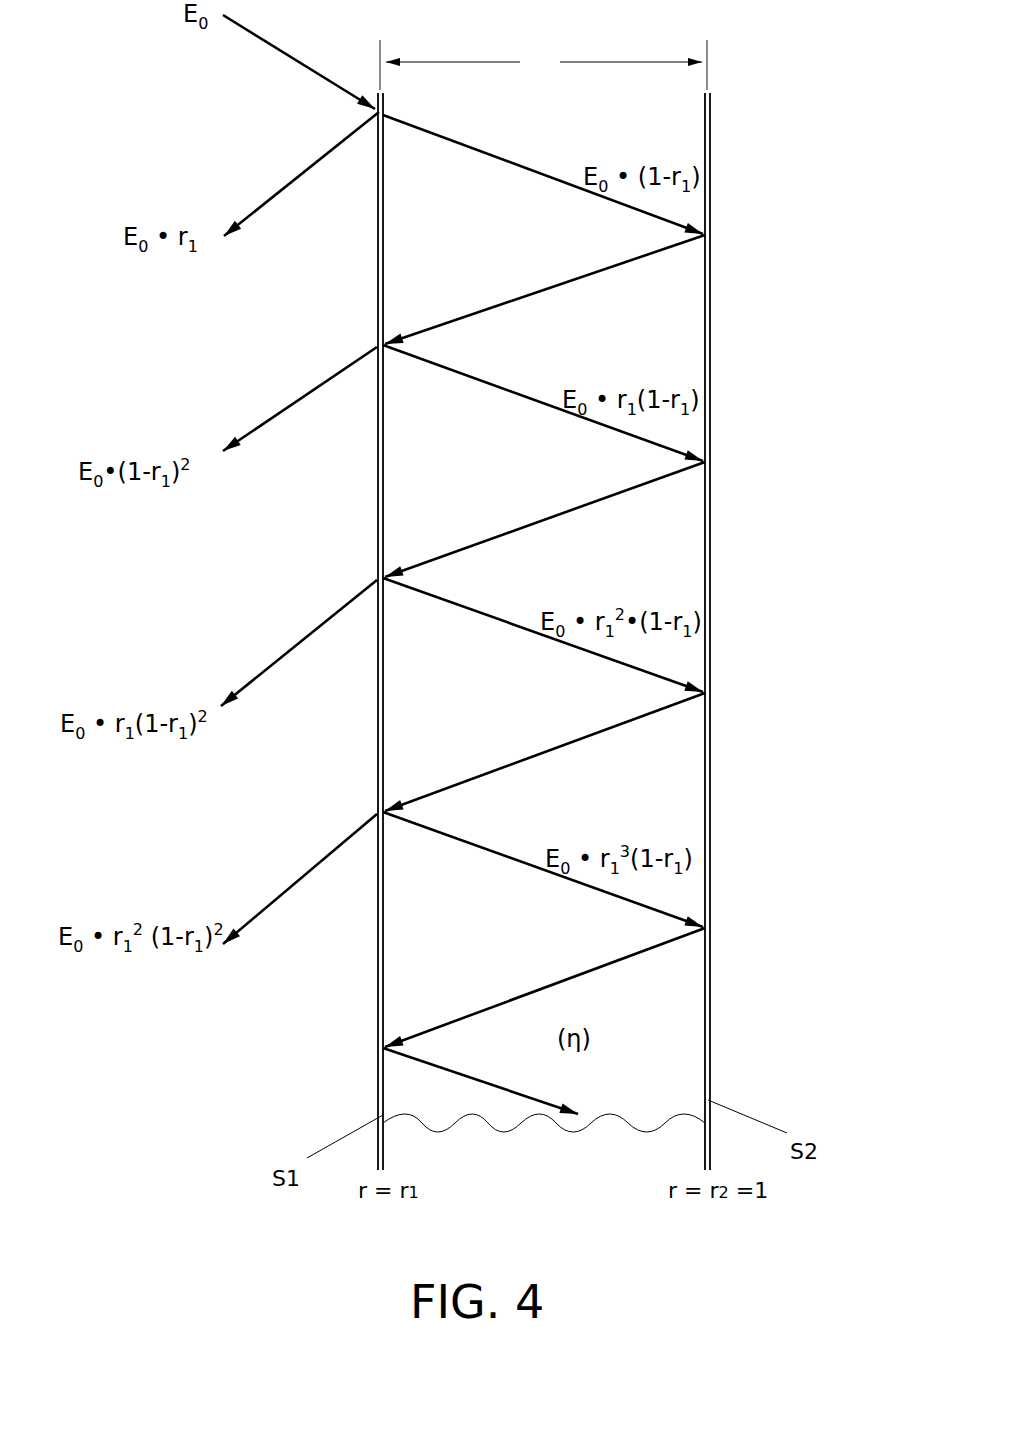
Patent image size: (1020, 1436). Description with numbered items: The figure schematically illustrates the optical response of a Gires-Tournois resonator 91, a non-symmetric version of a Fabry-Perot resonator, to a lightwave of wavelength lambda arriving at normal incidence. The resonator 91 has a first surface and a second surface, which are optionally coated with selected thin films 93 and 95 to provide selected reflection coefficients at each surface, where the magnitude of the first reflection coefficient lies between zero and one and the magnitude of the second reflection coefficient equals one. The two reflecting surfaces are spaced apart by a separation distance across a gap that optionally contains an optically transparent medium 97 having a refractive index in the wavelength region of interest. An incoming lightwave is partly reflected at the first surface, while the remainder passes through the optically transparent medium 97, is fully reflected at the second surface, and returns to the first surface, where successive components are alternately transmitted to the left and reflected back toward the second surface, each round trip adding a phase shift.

The Gires-Tournois resonator 91 is at (532, 653).
The thin film 93 is at (377, 983).
The thin film 95 is at (712, 545).
The optically transparent medium 97 is at (625, 1082).